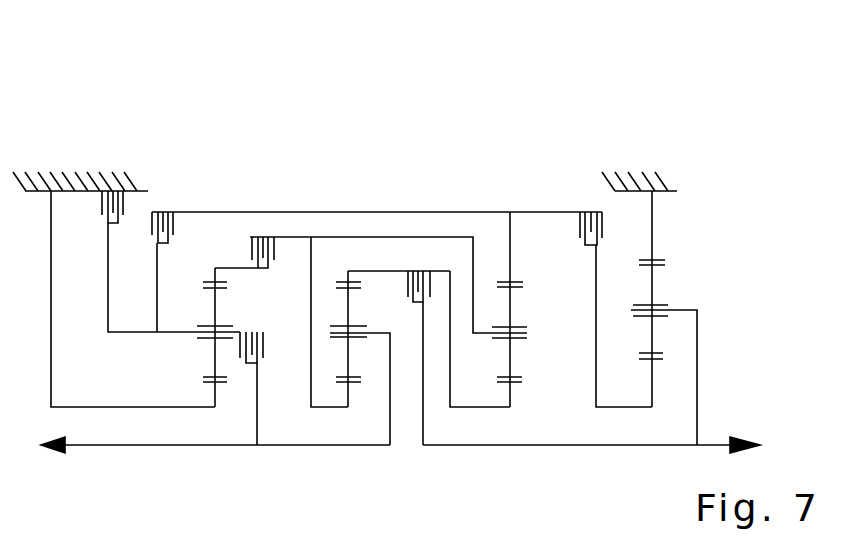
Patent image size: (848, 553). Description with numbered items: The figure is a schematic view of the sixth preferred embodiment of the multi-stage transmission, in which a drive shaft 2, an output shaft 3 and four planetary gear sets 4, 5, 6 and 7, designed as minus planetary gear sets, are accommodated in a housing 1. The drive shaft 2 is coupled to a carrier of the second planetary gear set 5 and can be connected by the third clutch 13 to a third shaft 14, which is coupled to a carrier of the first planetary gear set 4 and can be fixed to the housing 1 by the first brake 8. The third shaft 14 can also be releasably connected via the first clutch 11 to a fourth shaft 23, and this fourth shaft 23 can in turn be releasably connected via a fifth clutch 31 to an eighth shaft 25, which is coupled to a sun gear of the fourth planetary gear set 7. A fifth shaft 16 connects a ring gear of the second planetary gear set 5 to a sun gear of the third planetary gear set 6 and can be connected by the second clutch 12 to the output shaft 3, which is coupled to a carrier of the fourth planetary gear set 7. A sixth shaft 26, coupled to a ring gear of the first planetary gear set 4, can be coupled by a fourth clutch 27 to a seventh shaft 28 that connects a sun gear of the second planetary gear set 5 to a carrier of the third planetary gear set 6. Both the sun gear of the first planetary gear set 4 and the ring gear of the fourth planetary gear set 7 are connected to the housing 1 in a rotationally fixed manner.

The housing 1 is at (118, 180).
The drive shaft 2 is at (159, 446).
The output shaft 3 is at (697, 380).
The first planetary gear set 4 is at (217, 166).
The second planetary gear set 5 is at (350, 166).
The third planetary gear set 6 is at (512, 166).
The fourth planetary gear set 7 is at (654, 166).
The first brake 8 is at (104, 188).
The first clutch 11 is at (164, 210).
The second clutch 12 is at (418, 274).
The third clutch 13 is at (252, 350).
The third shaft 14 is at (107, 313).
The fifth shaft 16 is at (483, 406).
The fourth shaft 23 is at (520, 211).
The eighth shaft 25 is at (620, 406).
The sixth shaft 26 is at (239, 266).
The fourth clutch 27 is at (265, 250).
The seventh shaft 28 is at (390, 236).
The fifth clutch 31 is at (594, 222).